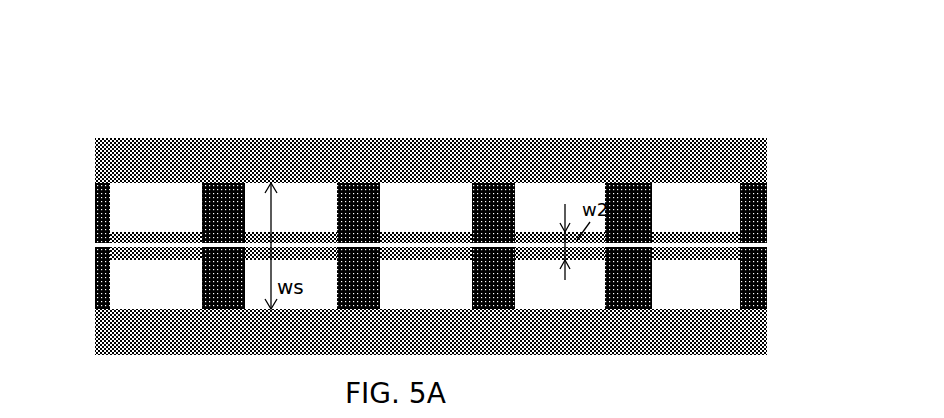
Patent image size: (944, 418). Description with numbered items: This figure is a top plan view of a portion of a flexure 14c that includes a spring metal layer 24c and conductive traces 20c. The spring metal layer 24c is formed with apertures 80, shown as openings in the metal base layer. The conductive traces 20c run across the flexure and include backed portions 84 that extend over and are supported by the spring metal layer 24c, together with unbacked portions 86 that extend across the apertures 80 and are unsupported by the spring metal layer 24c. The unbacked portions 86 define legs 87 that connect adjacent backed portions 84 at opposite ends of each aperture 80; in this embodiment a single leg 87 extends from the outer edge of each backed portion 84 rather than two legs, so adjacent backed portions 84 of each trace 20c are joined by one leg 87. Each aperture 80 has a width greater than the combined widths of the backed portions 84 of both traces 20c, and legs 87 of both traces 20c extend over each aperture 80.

The flexure 14c is at (105, 100).
The spring metal layer 24c is at (655, 139).
The apertures 80 is at (325, 195).
The backed portions 84 is at (222, 185).
The unbacked portions 86 is at (95, 222).
The legs 87 is at (128, 233).
The conductive traces 20c is at (770, 215).